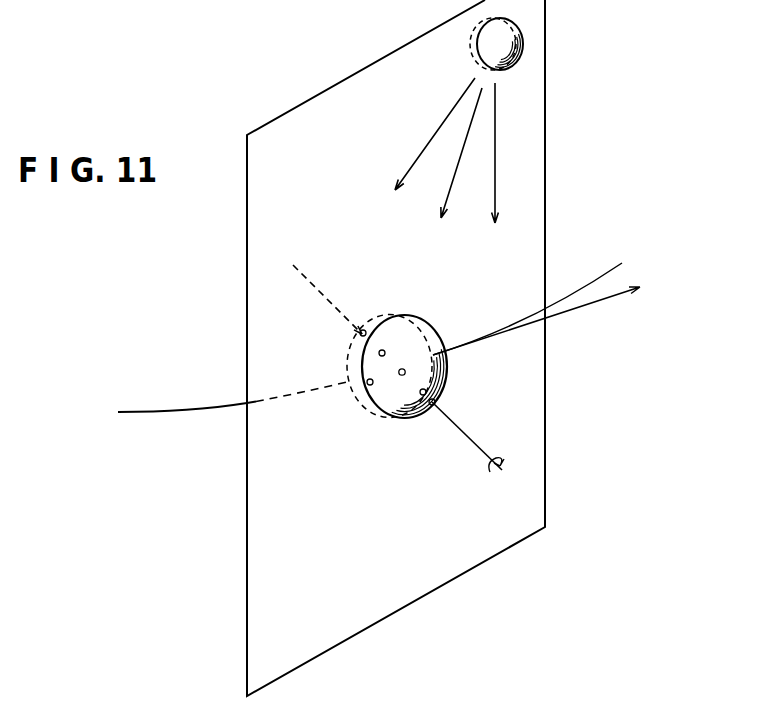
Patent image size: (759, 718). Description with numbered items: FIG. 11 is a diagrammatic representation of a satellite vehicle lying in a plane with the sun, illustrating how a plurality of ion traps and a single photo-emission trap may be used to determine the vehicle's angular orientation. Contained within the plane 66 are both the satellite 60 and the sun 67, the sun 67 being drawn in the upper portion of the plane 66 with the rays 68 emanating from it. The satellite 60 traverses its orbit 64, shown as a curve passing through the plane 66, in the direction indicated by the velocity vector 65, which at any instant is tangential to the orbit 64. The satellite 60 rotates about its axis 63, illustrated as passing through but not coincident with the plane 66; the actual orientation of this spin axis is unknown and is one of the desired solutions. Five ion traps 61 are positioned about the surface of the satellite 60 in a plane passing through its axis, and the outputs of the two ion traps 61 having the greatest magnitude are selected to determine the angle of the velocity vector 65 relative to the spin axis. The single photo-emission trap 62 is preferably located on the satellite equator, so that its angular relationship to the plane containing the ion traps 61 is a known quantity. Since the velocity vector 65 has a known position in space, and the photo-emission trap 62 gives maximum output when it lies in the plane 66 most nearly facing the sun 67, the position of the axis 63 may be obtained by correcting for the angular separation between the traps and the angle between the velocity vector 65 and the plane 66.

The satellite 60 is at (408, 315).
The ion traps 61 is at (359, 333).
The photo-emission trap 62 is at (370, 379).
The satellite axis 63 is at (300, 271).
The orbit 64 is at (193, 412).
The velocity vector 65 is at (590, 304).
The plane 66 is at (280, 166).
The sun 67 is at (501, 42).
The light beams 68 is at (430, 135).